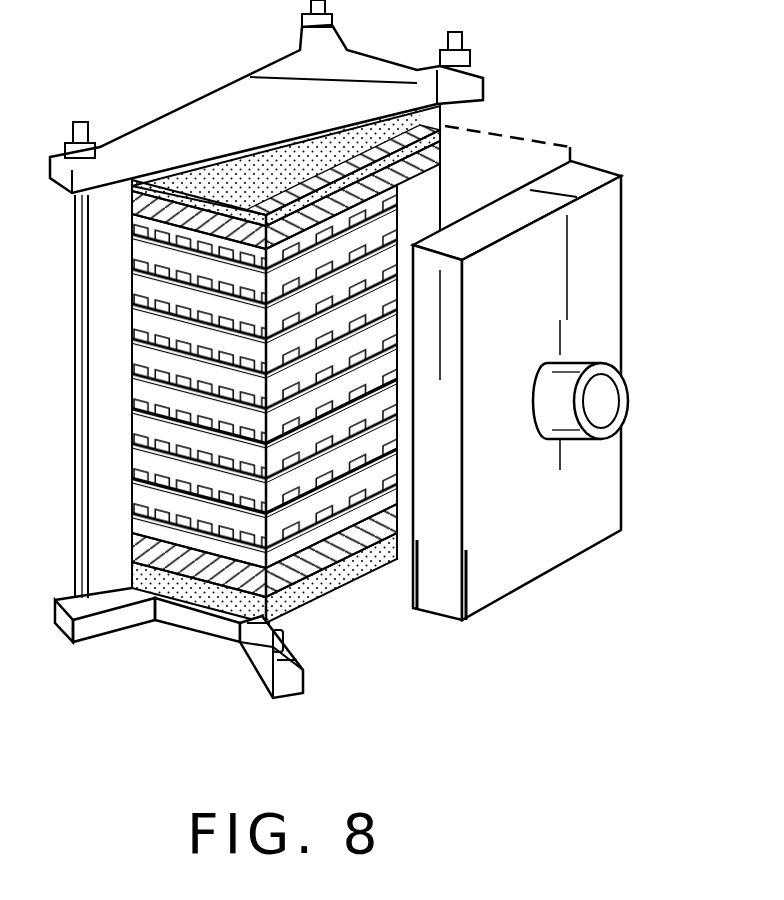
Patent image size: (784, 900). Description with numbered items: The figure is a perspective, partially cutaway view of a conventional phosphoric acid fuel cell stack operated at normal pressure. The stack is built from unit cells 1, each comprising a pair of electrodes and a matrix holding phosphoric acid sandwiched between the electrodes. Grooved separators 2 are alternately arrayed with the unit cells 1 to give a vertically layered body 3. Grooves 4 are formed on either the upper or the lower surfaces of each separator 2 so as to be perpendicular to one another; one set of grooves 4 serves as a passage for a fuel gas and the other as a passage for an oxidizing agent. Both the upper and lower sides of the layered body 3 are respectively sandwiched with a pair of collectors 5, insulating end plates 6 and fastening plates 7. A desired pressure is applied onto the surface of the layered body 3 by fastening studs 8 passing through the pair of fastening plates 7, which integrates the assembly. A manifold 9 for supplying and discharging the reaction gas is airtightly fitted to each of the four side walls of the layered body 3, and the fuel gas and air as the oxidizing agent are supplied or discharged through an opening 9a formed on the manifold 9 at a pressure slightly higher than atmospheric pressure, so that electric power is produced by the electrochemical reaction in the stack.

The unit cell 1 is at (150, 281).
The grooved separator 2 is at (140, 423).
The layered body 3 is at (127, 220).
The groove 4 is at (130, 480).
The collector 5 is at (130, 195).
The insulating end plate 6 is at (173, 186).
The fastening plate 7 is at (258, 97).
The fastening stud 8 is at (83, 528).
The manifold 9 is at (500, 582).
The opening 9a is at (602, 402).